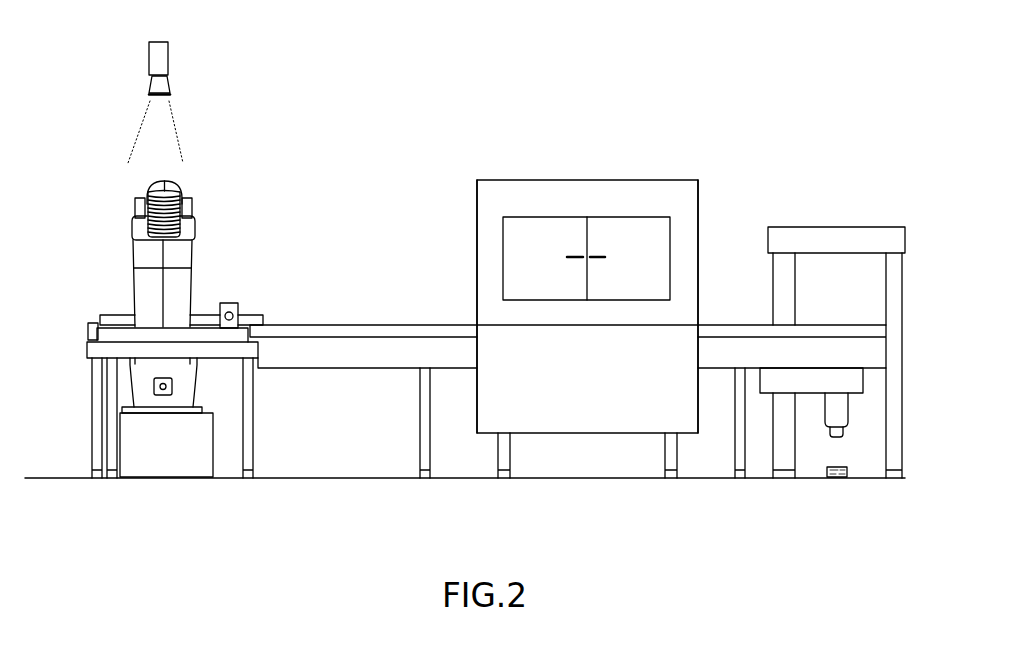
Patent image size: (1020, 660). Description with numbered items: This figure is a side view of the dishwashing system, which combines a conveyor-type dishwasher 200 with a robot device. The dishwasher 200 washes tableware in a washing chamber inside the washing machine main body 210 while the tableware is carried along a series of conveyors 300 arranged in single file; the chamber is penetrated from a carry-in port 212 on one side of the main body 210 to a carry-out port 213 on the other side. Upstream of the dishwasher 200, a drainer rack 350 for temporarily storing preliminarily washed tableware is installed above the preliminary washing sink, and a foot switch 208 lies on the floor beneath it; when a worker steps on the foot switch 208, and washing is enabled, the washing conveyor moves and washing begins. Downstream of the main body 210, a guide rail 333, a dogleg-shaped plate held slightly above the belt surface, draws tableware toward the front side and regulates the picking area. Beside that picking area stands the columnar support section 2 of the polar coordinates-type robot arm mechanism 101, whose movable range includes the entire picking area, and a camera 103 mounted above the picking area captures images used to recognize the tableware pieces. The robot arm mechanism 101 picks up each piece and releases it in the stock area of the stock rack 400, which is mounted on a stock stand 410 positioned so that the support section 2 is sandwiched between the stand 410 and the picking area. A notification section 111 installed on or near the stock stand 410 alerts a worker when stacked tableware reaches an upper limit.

The columnar support section 2 is at (135, 296).
The robot arm mechanism 101 is at (195, 193).
The camera 103 is at (168, 54).
The notification section 111 is at (233, 303).
The conveyor-type dishwasher 200 is at (588, 293).
The foot switch 208 is at (827, 478).
The washing machine main body 210 is at (632, 182).
The carry-in port 212 is at (698, 223).
The carry-out port 213 is at (477, 215).
The series of conveyors 300 is at (440, 318).
The guide rail 333 is at (255, 312).
The drainer rack 350 is at (833, 226).
The stock rack 400 is at (102, 322).
The stock stand 410 is at (254, 402).